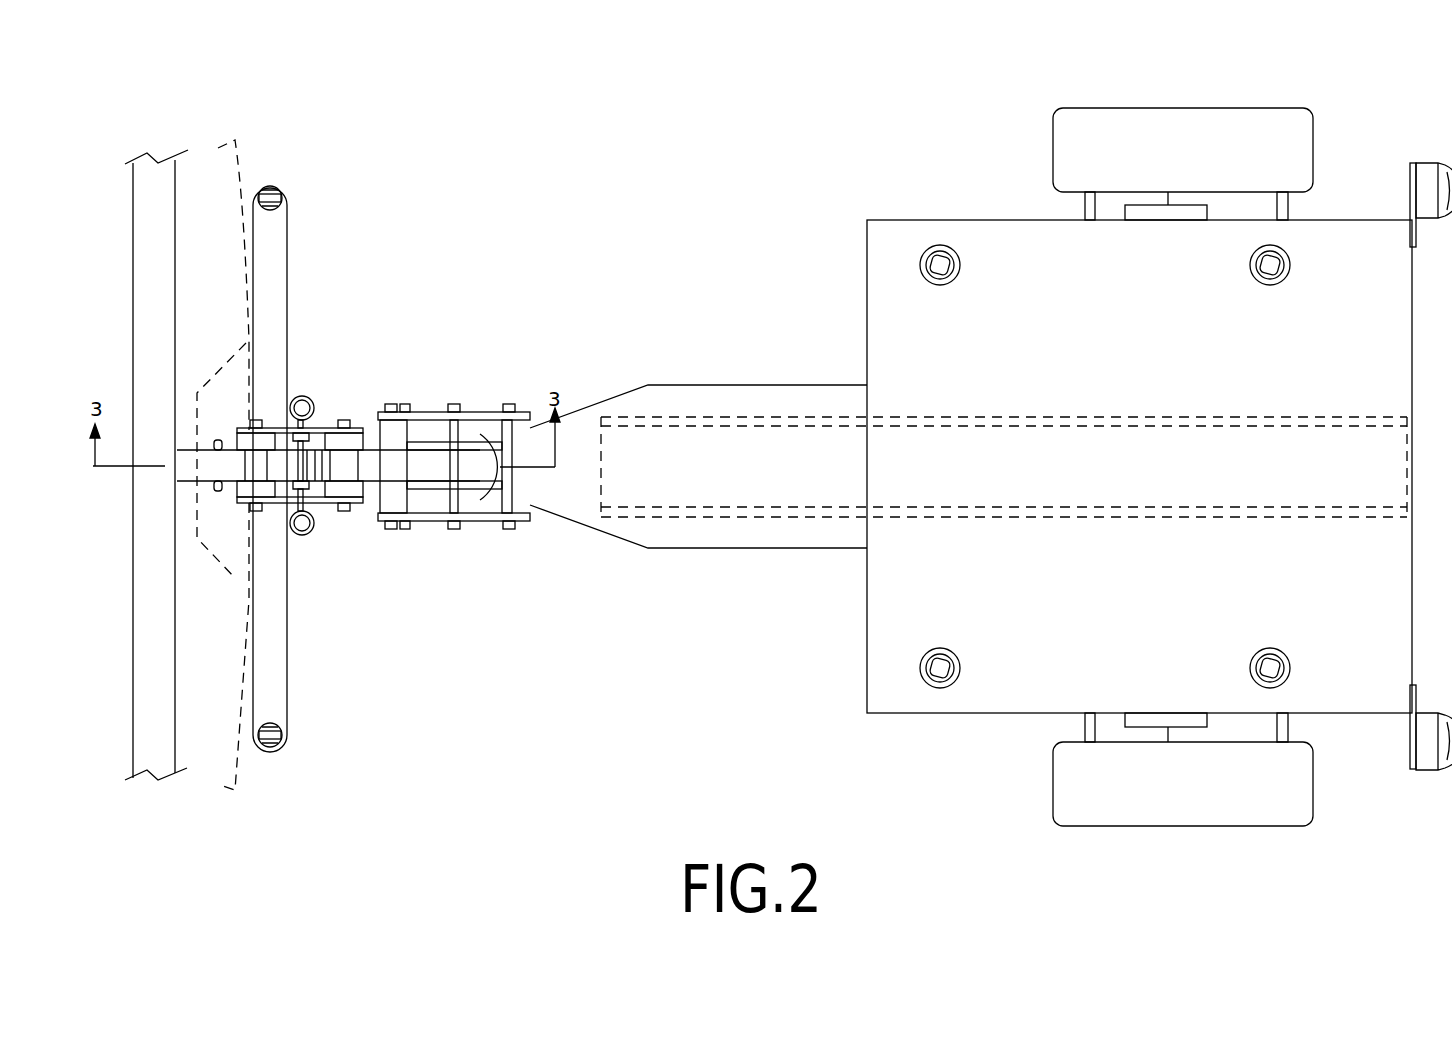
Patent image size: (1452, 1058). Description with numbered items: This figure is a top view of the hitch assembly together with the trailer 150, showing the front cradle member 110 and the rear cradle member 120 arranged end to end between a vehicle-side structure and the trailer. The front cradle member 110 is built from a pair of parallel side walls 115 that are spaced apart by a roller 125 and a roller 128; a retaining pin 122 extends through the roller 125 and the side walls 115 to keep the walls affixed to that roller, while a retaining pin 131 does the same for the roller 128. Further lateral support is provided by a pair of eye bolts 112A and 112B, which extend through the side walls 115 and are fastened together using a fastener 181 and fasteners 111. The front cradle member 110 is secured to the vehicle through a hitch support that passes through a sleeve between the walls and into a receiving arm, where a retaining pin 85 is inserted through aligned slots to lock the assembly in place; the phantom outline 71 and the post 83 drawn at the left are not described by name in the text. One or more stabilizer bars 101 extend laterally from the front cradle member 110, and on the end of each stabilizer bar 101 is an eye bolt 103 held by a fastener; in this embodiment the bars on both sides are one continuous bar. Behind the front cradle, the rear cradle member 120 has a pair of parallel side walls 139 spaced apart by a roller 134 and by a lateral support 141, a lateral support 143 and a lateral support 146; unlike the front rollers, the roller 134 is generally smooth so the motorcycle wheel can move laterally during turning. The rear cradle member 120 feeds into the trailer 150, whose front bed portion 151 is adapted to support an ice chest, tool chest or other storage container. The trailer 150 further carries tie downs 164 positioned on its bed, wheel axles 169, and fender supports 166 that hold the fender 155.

The wheel outline (phantom) 71 is at (208, 183).
The post 83 is at (154, 173).
The retaining pin 85 is at (218, 440).
The stabilizer bar 101 is at (273, 221).
The eye bolt 103 is at (283, 190).
The front cradle member 110 is at (353, 574).
The fastener 111 is at (311, 430).
The eye bolt 112A is at (299, 395).
The eye bolt 112B is at (299, 535).
The side wall 115 is at (276, 427).
The rear cradle member 120 is at (267, 187).
The retaining pin 122 is at (256, 512).
The roller 125 is at (238, 490).
The roller 128 is at (360, 440).
The retaining pin 131 is at (345, 425).
The roller 134 is at (392, 495).
The side wall 139 is at (531, 411).
The lateral support 141 is at (405, 410).
The lateral support 143 is at (456, 410).
The lateral support 146 is at (508, 410).
The trailer 150 is at (1430, 542).
The front bed portion 151 is at (702, 532).
The fender 155 is at (1287, 120).
The tie down 164 is at (940, 258).
The fender support 166 is at (1085, 206).
The wheel axle 169 is at (1188, 200).
The fastener 181 is at (305, 466).